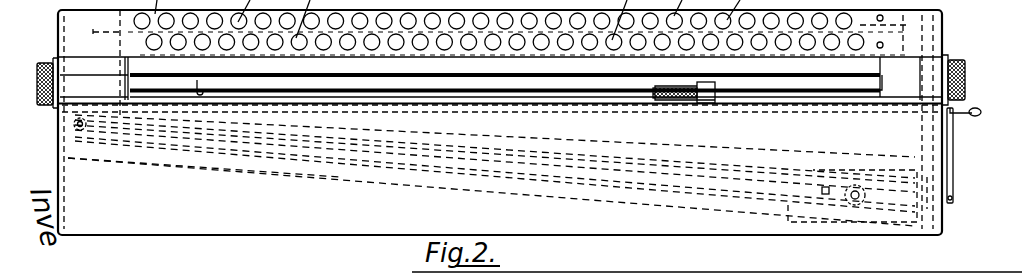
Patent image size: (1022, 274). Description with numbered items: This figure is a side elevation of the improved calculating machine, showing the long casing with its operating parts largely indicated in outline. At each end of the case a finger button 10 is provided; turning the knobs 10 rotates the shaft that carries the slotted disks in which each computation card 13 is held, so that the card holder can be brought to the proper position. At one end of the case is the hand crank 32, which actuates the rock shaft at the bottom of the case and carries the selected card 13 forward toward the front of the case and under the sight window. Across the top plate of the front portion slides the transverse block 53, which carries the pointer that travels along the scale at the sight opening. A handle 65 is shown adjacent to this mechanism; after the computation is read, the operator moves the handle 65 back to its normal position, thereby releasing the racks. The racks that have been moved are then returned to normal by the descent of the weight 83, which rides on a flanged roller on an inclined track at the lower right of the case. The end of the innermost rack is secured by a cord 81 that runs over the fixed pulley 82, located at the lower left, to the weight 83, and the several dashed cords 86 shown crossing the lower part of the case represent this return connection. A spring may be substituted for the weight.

The finger button 10 is at (37, 84).
The card 13 is at (798, 272).
The hand crank 32 is at (955, 148).
The block 53 is at (716, 85).
The handle 65 is at (707, 82).
The cord 81 is at (303, 158).
The fixed pulley 82 is at (80, 131).
The weight 83 is at (798, 207).
The cords 86 is at (693, 163).